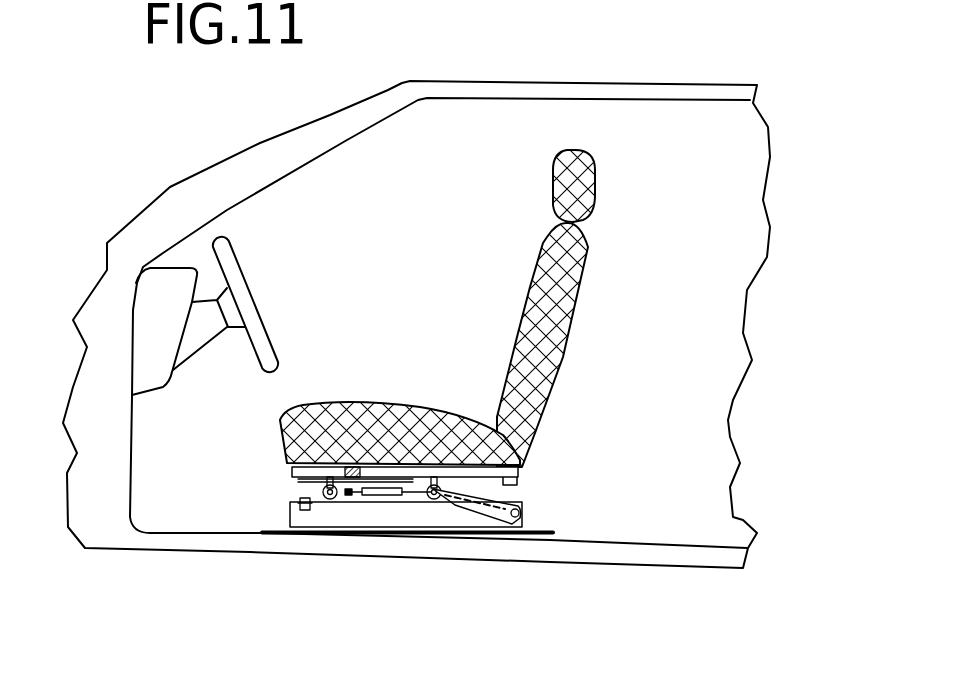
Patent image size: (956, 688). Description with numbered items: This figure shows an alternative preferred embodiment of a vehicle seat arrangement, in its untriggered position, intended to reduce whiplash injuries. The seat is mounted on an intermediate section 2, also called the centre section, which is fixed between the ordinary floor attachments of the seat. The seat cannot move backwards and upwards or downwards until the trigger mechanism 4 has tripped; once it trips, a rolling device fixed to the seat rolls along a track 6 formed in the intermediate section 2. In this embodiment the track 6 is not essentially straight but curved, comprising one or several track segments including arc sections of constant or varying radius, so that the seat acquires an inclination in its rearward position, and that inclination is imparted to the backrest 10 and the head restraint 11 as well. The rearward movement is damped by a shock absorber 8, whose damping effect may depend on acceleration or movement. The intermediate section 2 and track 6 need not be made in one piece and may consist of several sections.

The intermediate section 2 is at (313, 488).
The trigger mechanism 4 is at (343, 496).
The track 6 is at (463, 507).
The shock absorber 8 is at (390, 497).
The backrest 10 is at (583, 307).
The head restraint 11 is at (593, 168).